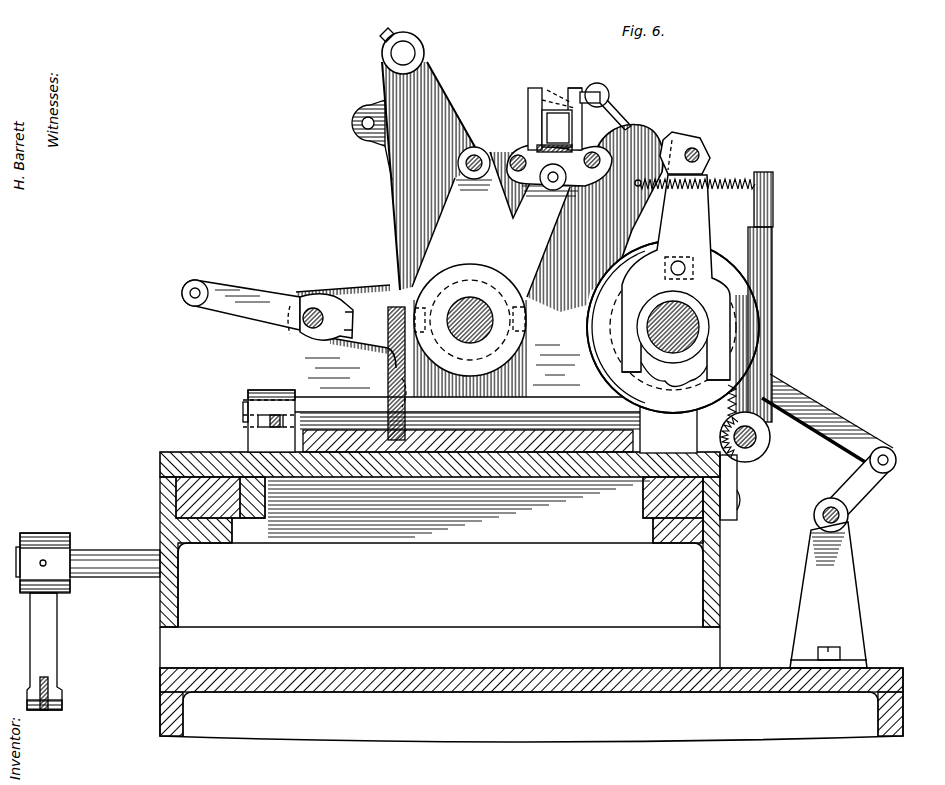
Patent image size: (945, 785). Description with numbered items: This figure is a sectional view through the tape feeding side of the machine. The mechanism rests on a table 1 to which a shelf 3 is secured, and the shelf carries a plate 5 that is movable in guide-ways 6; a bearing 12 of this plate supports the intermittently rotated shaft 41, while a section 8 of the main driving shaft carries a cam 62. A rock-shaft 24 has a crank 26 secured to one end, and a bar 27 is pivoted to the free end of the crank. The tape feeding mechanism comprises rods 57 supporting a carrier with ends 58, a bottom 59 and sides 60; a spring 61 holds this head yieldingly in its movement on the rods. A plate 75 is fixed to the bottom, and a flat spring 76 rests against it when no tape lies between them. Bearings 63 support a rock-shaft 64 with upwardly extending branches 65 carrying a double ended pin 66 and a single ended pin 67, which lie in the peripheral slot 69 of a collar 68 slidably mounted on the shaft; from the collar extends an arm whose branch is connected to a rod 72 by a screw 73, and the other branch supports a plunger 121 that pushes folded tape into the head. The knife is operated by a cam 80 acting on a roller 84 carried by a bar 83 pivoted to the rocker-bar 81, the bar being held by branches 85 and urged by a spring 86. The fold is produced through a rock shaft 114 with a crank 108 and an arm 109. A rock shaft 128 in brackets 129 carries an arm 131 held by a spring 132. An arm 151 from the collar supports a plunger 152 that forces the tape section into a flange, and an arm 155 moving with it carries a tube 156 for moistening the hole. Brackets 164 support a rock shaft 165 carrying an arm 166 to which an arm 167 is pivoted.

The table 1 is at (905, 699).
The shelf 3 is at (720, 583).
The plate 5 is at (200, 452).
The guide-ways 6 is at (160, 490).
The main driving shaft section 8 is at (693, 327).
The bearing 12 is at (440, 86).
The rock-shaft 24 is at (115, 555).
The crank 26 is at (59, 637).
The bar 27 is at (50, 683).
The shaft 41 is at (497, 300).
The rods 57 is at (505, 150).
The ends 58 is at (575, 92).
The bottom 59 is at (620, 114).
The sides 60 is at (536, 108).
The spring 61 is at (605, 87).
The cam 62 is at (760, 335).
The bearings 63 is at (269, 412).
The rock-shaft 64 is at (318, 399).
The upwardly extending branches 65 is at (397, 383).
The double ended pin 66 is at (527, 323).
The single ended pin 67 is at (427, 300).
The collar 68 is at (487, 265).
The peripheral slot 69 is at (466, 280).
The rod 72 is at (538, 172).
The screw 73 is at (587, 169).
The plate 75 is at (535, 143).
The flat spring 76 is at (553, 118).
The cams 80 is at (673, 339).
The rocker-bar 81 is at (690, 140).
The bar 83 is at (707, 212).
The roller 84 is at (690, 262).
The branches 85 is at (674, 360).
The spring 86 is at (722, 418).
The crank 108 is at (380, 100).
The arm 109 is at (384, 150).
The rock shaft 114 is at (410, 52).
The plunger 121 is at (463, 170).
The rock shaft 128 is at (765, 443).
The brackets 129 is at (738, 488).
The arm 131 is at (774, 252).
The spring 132 is at (734, 181).
The arm 151 is at (372, 290).
The plunger 152 is at (303, 331).
The arm 155 is at (268, 289).
The tube 156 is at (199, 285).
The brackets 164 is at (828, 595).
The rock shaft 165 is at (848, 518).
The arm 166 is at (876, 495).
The arm 167 is at (838, 420).